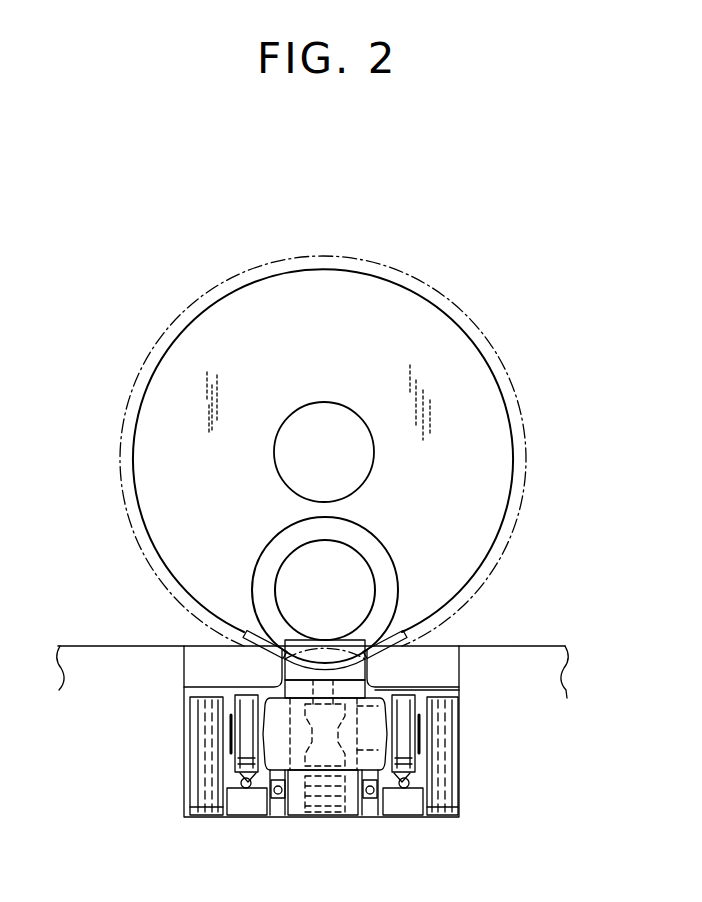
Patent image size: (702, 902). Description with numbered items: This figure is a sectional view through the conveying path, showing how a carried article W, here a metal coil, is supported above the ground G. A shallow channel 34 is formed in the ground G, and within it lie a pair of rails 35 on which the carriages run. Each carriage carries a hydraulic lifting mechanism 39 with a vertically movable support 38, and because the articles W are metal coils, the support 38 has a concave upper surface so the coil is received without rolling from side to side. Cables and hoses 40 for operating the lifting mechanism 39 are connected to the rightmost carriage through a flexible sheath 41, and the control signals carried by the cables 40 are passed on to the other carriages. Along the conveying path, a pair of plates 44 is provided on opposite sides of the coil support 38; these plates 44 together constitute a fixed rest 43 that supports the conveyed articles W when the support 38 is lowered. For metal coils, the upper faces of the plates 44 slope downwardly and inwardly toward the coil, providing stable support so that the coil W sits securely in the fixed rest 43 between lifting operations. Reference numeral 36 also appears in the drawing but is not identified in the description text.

The articles W is at (519, 485).
The ground G is at (542, 643).
The shallow channel 34 is at (458, 645).
The rails 35 is at (240, 820).
The guide rod 36 is at (240, 760).
The vertically movable support 38 is at (285, 685).
The hydraulic lifting mechanism 39 is at (348, 817).
The cables and hoses 40 is at (203, 750).
The flexible sheath 41 is at (184, 718).
The fixed rest 43 is at (242, 630).
The plates 44 is at (243, 636).